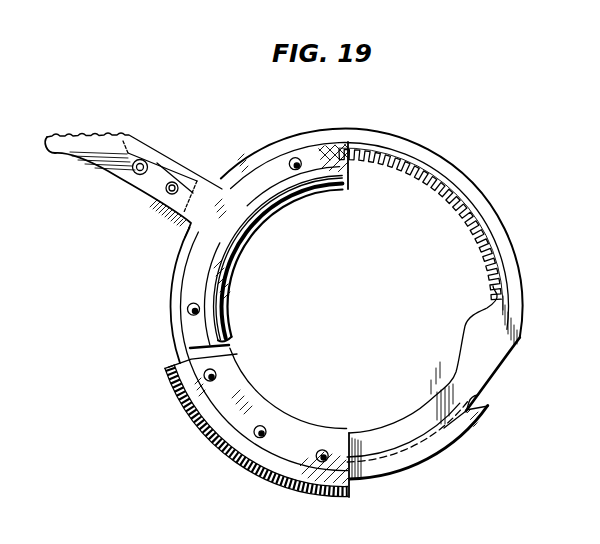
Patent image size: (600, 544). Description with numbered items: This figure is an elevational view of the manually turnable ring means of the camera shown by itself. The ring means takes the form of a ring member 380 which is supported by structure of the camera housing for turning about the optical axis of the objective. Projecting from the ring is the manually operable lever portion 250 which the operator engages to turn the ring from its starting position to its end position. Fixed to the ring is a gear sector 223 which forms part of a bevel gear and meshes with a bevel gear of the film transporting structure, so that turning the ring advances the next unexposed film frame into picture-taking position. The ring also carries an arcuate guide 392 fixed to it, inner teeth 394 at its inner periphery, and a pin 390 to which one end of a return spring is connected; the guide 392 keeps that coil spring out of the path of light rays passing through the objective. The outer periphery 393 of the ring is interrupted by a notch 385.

The manually operable lever portion 250 is at (80, 140).
The arcuate guide 392 is at (268, 220).
The inner teeth 394 is at (458, 207).
The ring member 380 is at (450, 377).
The notch 385 is at (483, 395).
The outer periphery 393 is at (430, 457).
The pin 390 is at (268, 422).
The gear sector 223 is at (241, 457).